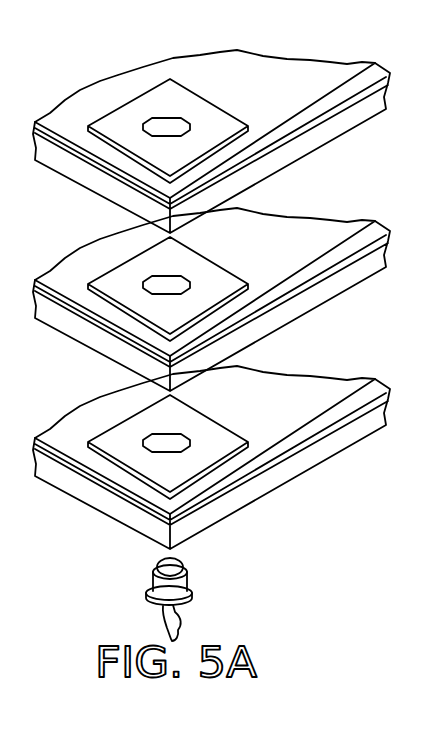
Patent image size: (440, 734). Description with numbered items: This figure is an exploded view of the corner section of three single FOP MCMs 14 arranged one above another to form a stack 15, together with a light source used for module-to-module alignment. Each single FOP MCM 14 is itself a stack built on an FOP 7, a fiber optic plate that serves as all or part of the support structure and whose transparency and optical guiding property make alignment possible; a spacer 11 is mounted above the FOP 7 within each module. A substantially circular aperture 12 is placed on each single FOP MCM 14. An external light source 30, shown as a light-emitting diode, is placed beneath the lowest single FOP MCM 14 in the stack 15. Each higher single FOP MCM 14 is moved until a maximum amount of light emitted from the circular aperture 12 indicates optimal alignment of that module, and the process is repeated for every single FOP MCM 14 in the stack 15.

The FOP 7 is at (205, 110).
The spacer 11 is at (211, 145).
The circular aperture 12 is at (168, 102).
The single FOP MCM 14 is at (211, 274).
The stack 15 is at (211, 292).
The external light source 30 is at (192, 587).